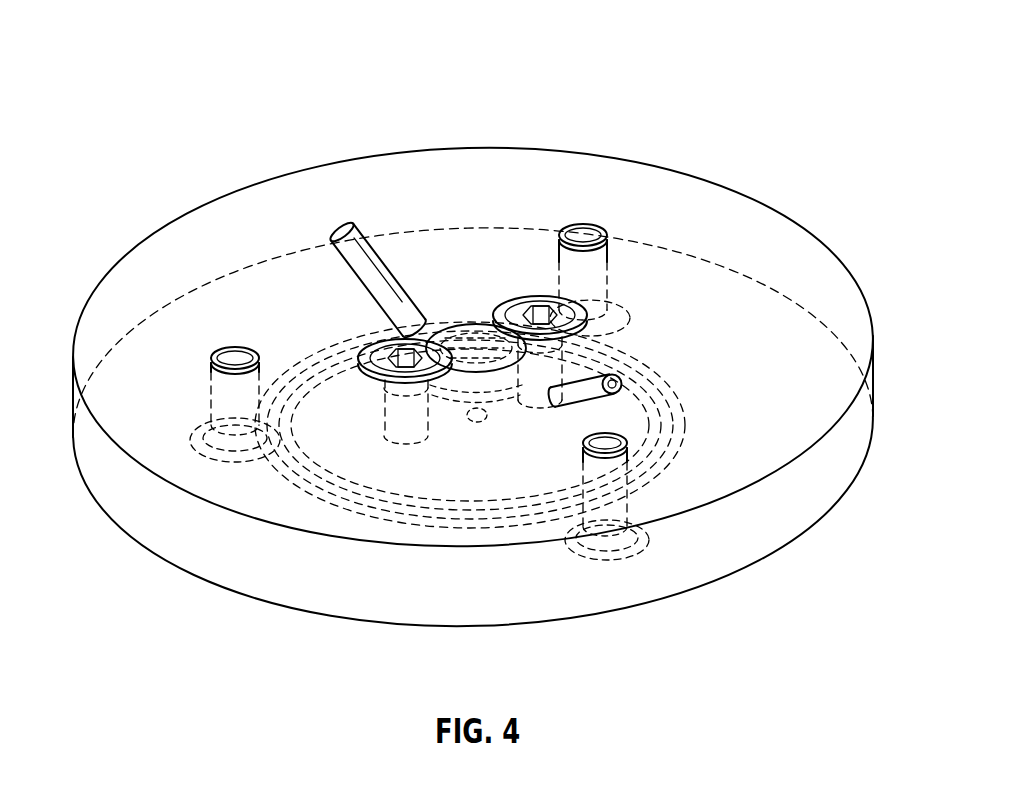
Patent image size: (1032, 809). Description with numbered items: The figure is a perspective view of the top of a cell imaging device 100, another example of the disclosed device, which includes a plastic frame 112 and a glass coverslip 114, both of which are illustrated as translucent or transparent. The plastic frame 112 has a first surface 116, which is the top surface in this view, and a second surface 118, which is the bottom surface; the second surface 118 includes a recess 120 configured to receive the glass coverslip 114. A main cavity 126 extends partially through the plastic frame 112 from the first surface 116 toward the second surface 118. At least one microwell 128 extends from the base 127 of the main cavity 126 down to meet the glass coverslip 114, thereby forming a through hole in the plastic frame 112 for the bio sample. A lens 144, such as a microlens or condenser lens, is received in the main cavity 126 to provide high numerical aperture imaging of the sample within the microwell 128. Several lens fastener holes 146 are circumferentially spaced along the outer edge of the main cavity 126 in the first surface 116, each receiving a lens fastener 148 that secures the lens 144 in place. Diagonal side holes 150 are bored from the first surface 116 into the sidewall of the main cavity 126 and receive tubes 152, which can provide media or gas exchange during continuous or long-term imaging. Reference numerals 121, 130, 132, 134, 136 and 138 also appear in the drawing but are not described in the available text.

The cell imaging device 100 is at (142, 122).
The plastic frame 112 is at (844, 256).
The glass coverslip 114 is at (673, 442).
The first surface 116 is at (286, 211).
The second surface 118 is at (183, 571).
The recess 120 is at (633, 346).
The annular groove 121 is at (668, 374).
The main cavity 126 is at (377, 248).
The base 127 is at (504, 410).
The microwell 128 is at (473, 424).
The locating post 130 is at (213, 363).
The post base 132 is at (190, 440).
The channel ring 134 is at (467, 518).
The central bore 136 is at (483, 445).
The fastener head 138 is at (385, 433).
The lens 144 is at (468, 326).
The lens fastener hole 146 is at (410, 448).
The lens fastener 148 is at (526, 306).
The diagonal side hole 150 is at (544, 414).
The tube 152 is at (597, 403).